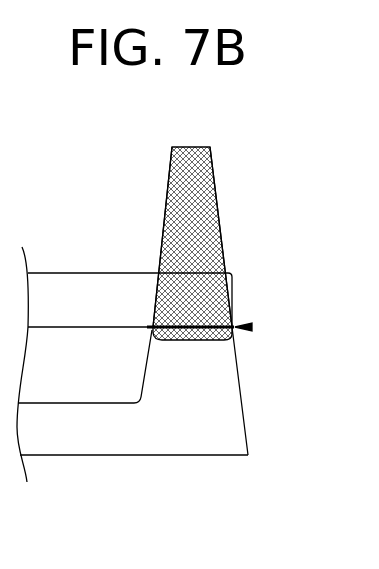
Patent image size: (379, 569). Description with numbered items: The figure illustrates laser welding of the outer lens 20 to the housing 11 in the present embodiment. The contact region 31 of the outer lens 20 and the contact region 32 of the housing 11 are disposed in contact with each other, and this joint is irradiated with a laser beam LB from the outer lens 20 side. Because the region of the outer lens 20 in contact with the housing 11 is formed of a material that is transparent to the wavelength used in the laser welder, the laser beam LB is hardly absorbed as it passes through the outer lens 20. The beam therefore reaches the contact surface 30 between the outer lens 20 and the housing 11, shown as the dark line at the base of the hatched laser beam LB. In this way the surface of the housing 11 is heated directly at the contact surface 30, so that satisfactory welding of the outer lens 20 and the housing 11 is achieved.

The housing 11 is at (223, 393).
The outer lens 20 is at (90, 295).
The laser beam LB is at (203, 185).
The contact surface 30 is at (252, 327).
The contact region of the outer lens 31 is at (233, 320).
The contact region of the housing 32 is at (150, 315).